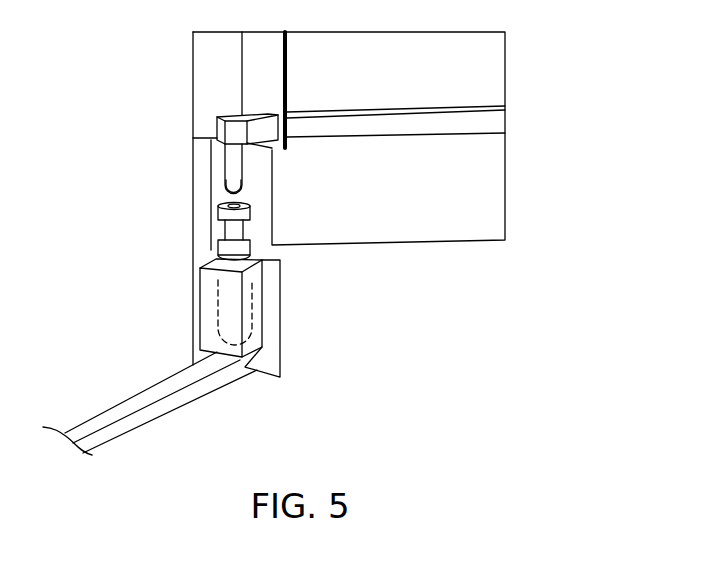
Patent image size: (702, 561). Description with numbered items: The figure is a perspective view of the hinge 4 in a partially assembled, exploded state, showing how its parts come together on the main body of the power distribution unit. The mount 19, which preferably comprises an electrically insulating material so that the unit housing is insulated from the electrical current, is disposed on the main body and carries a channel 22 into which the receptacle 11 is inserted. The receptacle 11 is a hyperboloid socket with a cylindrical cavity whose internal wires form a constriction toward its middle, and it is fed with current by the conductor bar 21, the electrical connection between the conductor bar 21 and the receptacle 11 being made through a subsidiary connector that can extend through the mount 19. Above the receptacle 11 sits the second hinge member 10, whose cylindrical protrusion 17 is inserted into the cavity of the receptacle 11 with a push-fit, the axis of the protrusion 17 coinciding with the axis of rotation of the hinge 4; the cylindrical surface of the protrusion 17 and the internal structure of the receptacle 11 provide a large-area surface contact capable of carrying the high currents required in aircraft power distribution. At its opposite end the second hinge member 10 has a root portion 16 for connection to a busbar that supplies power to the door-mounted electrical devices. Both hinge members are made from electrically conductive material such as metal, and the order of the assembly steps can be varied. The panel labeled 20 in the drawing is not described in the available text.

The hinge 4 is at (300, 273).
The second hinge member 10 is at (230, 170).
The receptacle 11 is at (228, 238).
The root portion 16 is at (232, 134).
The protrusion 17 is at (228, 192).
The mount 19 is at (260, 307).
The frame panel 20 is at (498, 122).
The conductor bar 21 is at (125, 403).
The channel 22 is at (230, 298).